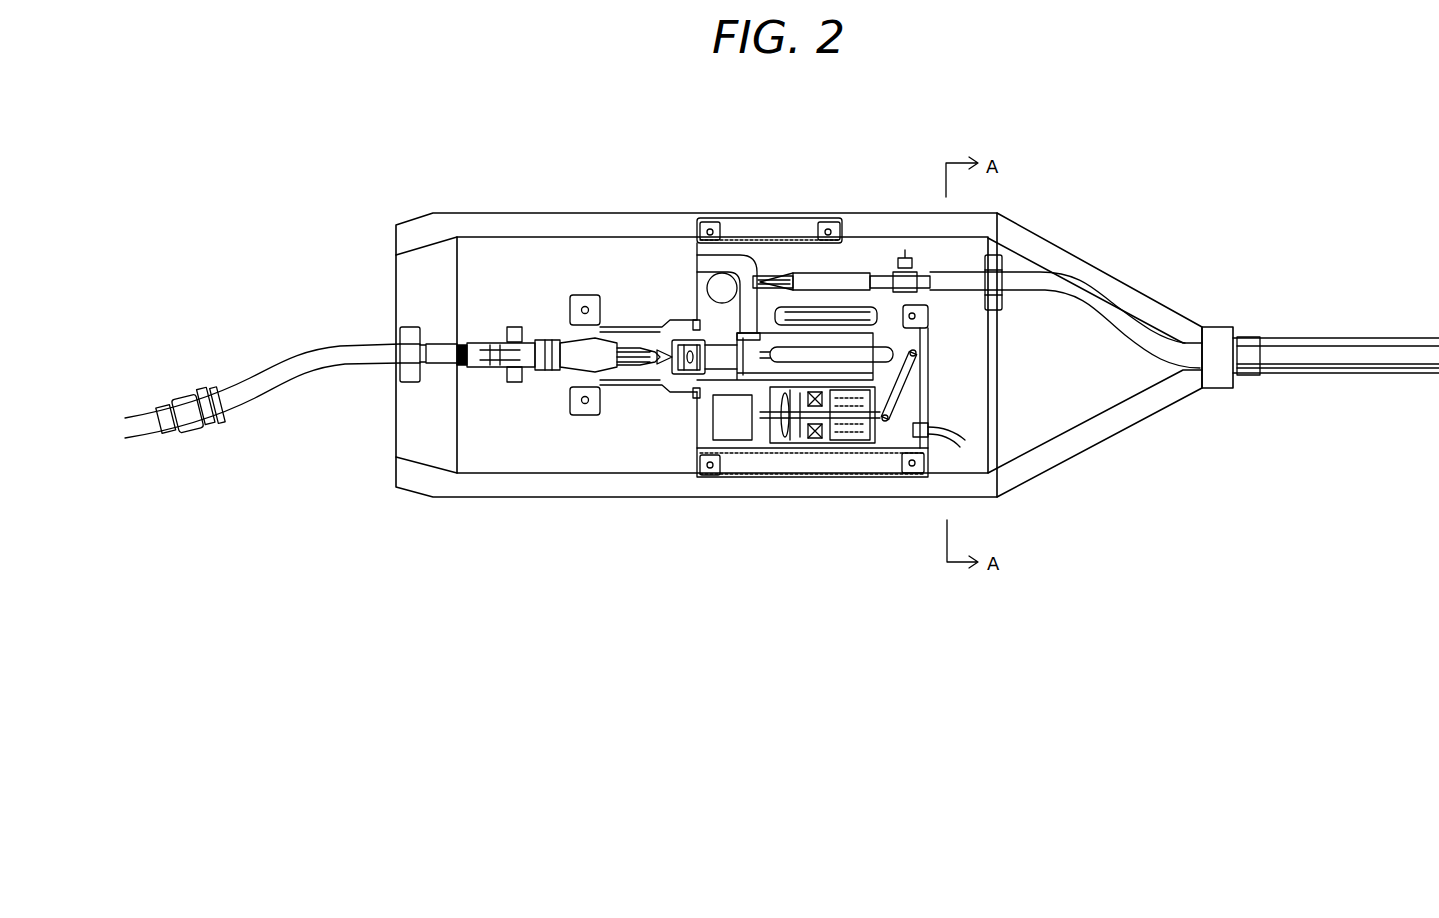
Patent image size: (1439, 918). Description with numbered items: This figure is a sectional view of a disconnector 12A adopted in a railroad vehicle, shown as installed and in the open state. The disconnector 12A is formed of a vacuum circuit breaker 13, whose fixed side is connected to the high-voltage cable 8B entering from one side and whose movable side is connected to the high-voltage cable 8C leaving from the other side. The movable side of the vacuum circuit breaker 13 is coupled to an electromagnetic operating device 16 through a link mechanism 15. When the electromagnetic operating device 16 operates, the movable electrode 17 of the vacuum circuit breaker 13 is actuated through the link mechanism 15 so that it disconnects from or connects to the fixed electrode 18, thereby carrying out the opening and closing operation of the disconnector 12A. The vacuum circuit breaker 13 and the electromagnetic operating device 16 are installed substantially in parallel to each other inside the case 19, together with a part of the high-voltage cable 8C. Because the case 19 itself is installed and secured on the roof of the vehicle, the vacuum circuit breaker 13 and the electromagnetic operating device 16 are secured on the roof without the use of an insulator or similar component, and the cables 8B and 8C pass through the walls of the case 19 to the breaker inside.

The high-voltage cable 8B is at (283, 375).
The high-voltage cable 8C is at (1145, 342).
The disconnector 12A is at (672, 386).
The vacuum circuit breaker 13 is at (688, 345).
The link mechanism 15 is at (905, 370).
The electromagnetic operating device 16 is at (800, 442).
The movable electrode 17 is at (689, 368).
The fixed electrode 18 is at (695, 376).
The case 19 is at (870, 488).